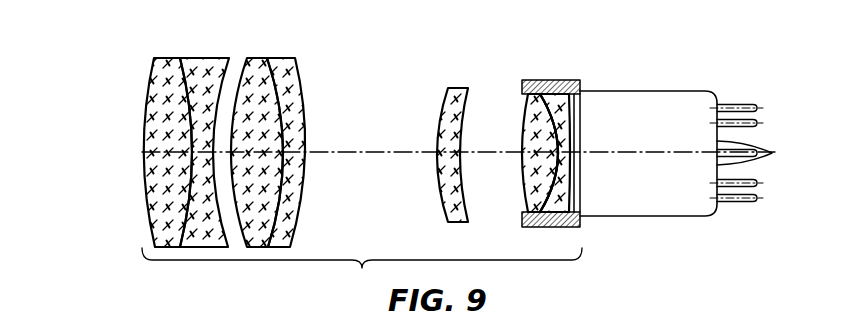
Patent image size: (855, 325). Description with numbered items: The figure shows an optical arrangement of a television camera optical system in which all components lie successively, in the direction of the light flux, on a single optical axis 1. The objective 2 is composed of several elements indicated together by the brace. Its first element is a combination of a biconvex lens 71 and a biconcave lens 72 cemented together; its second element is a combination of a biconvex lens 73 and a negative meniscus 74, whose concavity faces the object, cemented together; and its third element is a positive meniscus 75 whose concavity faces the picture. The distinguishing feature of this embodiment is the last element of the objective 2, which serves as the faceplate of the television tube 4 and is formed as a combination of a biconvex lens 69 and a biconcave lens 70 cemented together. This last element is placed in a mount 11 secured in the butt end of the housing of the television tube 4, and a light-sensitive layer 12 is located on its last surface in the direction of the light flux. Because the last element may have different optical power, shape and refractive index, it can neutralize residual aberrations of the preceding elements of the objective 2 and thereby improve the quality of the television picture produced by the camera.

The optical axis 1 is at (391, 153).
The objective 2 is at (362, 275).
The television tube 4 is at (622, 92).
The mount 11 is at (525, 83).
The light-sensitive layer 12 is at (556, 189).
The biconvex lens 69 is at (539, 93).
The biconcave lens 70 is at (570, 91).
The biconvex lens 71 is at (160, 58).
The biconcave lens 72 is at (198, 58).
The biconvex lens 73 is at (255, 58).
The negative meniscus 74 is at (290, 58).
The positive meniscus 75 is at (455, 88).